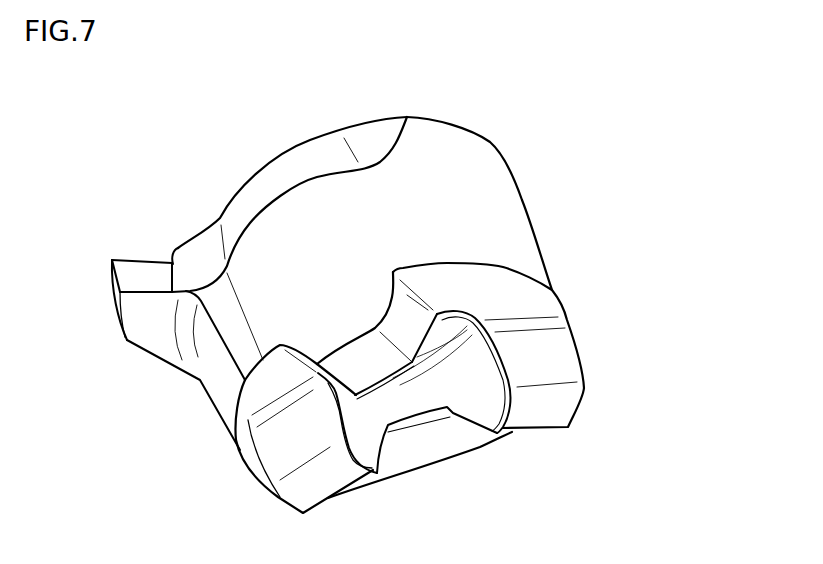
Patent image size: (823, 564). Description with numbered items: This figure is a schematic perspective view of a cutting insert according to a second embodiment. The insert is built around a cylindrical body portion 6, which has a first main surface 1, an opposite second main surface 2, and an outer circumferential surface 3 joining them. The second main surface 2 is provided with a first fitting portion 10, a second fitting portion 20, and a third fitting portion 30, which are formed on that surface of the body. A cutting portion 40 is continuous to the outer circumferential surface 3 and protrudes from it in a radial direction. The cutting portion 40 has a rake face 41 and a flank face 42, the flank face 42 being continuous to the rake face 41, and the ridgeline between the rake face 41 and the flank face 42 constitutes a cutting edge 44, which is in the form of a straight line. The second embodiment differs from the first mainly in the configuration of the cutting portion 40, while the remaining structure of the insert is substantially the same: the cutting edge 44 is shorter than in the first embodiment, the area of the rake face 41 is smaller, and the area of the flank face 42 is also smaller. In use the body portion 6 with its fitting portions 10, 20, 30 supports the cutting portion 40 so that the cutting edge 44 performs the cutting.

The cylindrical body portion 6 is at (362, 195).
The first main surface 1 is at (353, 127).
The second main surface 2 is at (493, 283).
The outer circumferential surface 3 is at (423, 182).
The first fitting portion 10 is at (313, 482).
The second fitting portion 20 is at (378, 360).
The third fitting portion 30 is at (539, 412).
The cutting portion 40 is at (117, 258).
The rake face 41 is at (138, 275).
The flank face 42 is at (95, 273).
The cutting edge 44 is at (122, 288).